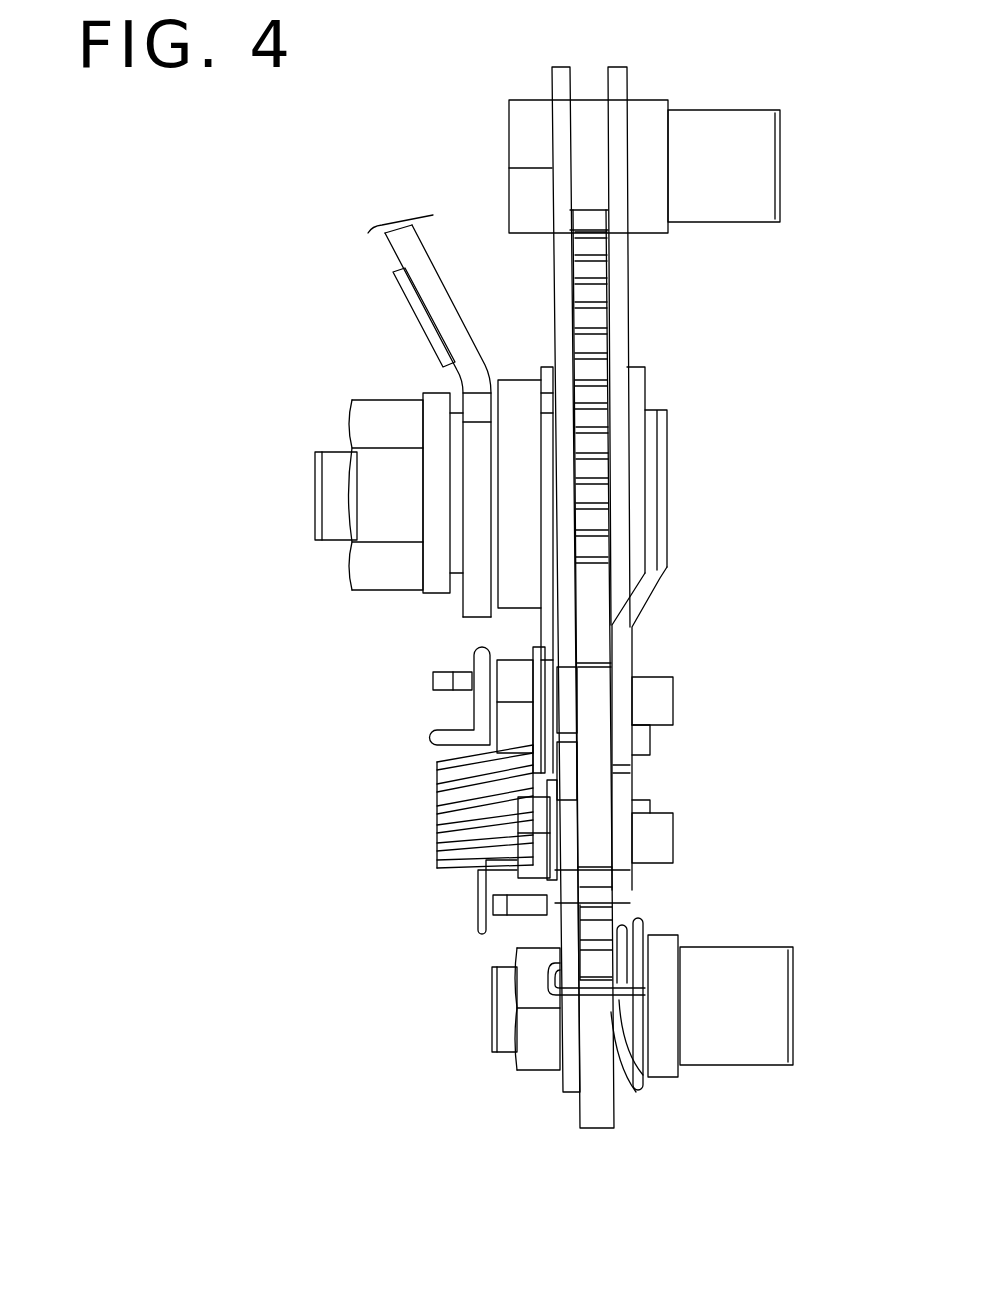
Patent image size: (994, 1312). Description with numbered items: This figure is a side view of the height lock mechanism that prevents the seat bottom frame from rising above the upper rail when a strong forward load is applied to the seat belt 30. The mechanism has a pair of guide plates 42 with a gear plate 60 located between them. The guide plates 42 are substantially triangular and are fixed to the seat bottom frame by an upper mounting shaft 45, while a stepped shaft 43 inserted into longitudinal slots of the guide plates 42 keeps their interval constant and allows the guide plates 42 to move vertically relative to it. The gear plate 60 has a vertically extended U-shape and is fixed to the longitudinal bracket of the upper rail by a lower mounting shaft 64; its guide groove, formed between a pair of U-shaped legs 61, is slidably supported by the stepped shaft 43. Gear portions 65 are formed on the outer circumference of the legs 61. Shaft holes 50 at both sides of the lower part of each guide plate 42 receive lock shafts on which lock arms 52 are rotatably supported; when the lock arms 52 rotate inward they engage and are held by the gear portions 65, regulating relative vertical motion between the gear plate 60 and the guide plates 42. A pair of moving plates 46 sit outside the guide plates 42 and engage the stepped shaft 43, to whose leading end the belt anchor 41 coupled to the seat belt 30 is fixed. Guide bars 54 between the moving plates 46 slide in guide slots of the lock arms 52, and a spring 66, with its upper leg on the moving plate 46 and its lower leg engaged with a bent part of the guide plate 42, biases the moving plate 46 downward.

The guide plates 42 is at (547, 70).
The upper mounting shaft 45 is at (723, 130).
The U-shaped legs 61 is at (583, 210).
The gear portions 65 is at (588, 295).
The moving plates 46 is at (541, 370).
The belt anchor 41 is at (397, 250).
The seat belt 30 is at (369, 416).
The stepped shaft 43 is at (317, 493).
The lock arms 52 is at (590, 638).
The guide bars 54 is at (667, 697).
The shaft holes 50 is at (663, 838).
The spring 66 is at (437, 818).
The lower mounting shaft 64 is at (743, 967).
The gear plate 60 is at (580, 1128).